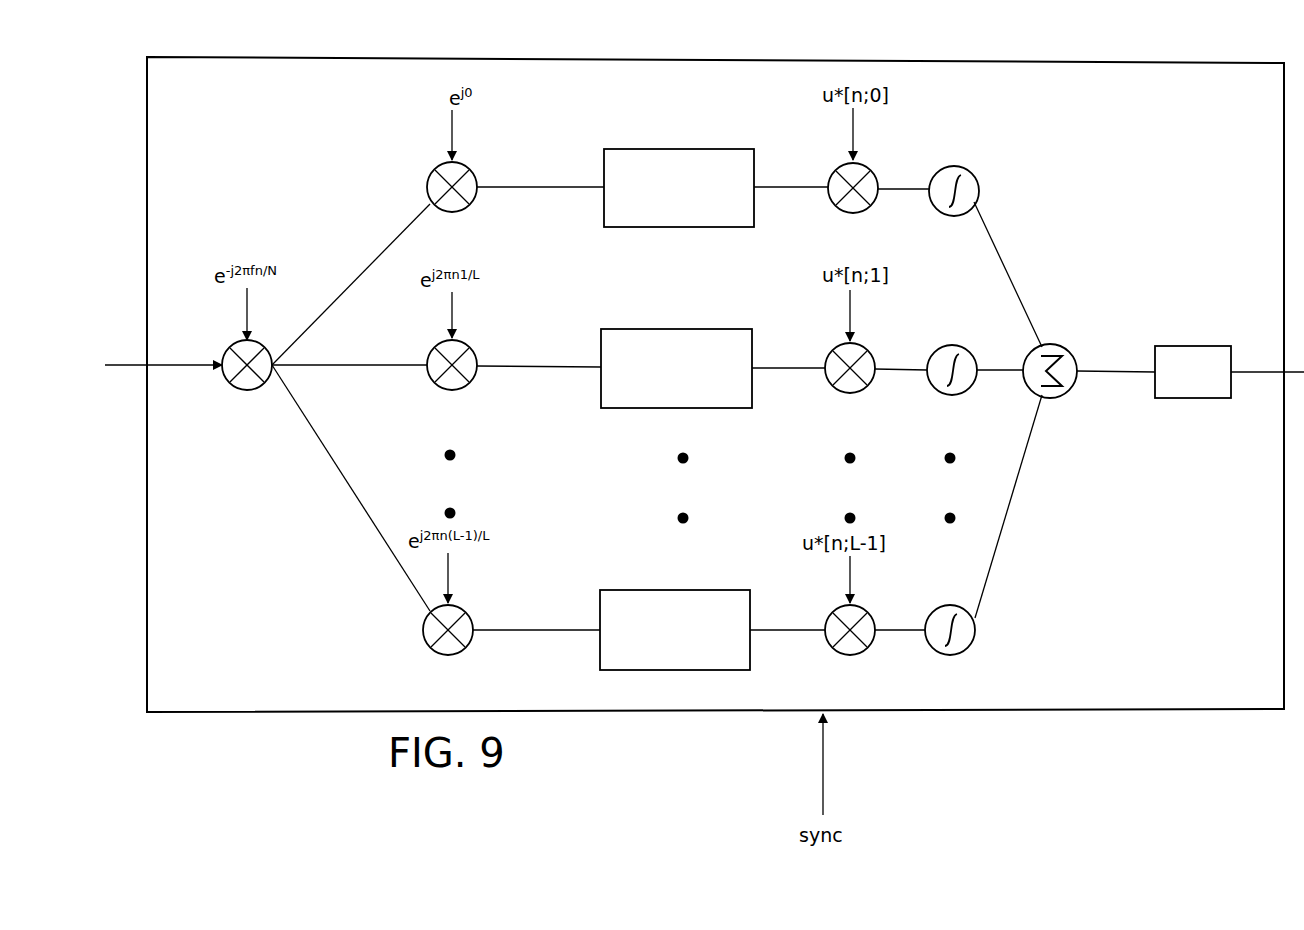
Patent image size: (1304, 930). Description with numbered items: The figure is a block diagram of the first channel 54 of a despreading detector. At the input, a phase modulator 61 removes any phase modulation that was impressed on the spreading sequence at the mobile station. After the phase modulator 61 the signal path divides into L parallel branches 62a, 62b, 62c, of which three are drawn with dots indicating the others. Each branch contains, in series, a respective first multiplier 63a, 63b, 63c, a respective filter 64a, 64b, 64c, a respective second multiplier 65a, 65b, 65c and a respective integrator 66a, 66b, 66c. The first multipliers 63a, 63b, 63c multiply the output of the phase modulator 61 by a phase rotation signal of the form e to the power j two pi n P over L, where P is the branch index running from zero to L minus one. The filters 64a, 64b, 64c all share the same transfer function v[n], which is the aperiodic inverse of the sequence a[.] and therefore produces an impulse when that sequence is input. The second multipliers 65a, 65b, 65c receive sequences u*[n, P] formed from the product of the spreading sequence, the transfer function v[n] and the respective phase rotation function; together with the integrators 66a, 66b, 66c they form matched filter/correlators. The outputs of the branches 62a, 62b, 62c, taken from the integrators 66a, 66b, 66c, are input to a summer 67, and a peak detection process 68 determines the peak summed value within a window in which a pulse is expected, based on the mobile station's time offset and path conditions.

The first channel 54 is at (982, 63).
The phase modulator 61 is at (243, 388).
The first branch 62a is at (508, 187).
The second branch 62b is at (508, 367).
The third branch 62c is at (505, 631).
The first multiplier 63a is at (460, 202).
The first multiplier 63b is at (460, 381).
The first multiplier 63c is at (452, 648).
The filter 64a is at (735, 207).
The filter 64b is at (735, 387).
The filter 64c is at (733, 650).
The second multiplier 65a is at (860, 204).
The second multiplier 65b is at (857, 383).
The second multiplier 65c is at (855, 645).
The integrator 66a is at (972, 188).
The integrator 66b is at (968, 386).
The integrator 66c is at (962, 645).
The summer 67 is at (1075, 362).
The peak detection process 68 is at (1193, 372).